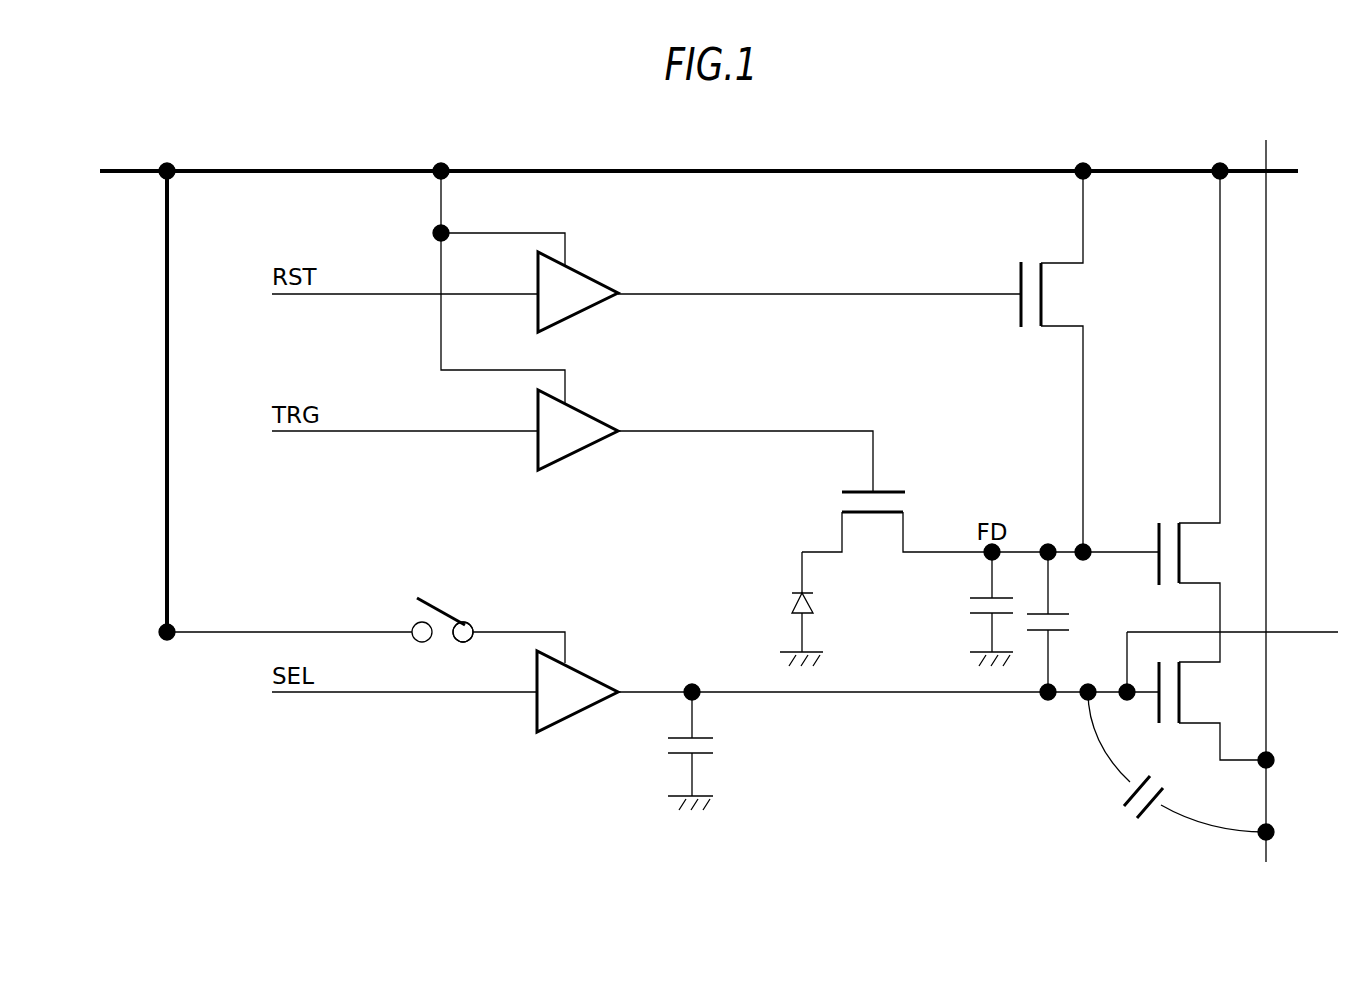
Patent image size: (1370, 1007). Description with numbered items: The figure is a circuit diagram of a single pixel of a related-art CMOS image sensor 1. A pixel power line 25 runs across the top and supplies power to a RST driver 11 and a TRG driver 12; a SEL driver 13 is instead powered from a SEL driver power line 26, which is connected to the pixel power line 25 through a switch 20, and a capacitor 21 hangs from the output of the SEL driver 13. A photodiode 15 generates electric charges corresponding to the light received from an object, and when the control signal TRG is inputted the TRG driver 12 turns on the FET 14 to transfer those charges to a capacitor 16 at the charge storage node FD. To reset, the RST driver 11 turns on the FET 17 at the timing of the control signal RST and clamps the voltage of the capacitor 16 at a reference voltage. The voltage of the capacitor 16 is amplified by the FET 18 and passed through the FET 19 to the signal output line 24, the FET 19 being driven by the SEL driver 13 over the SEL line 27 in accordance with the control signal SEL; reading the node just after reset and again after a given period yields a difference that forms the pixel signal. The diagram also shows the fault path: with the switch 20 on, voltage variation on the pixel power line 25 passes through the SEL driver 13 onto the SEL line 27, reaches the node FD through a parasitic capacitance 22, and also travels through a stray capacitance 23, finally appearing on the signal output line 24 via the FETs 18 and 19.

The CMOS image sensor 1 is at (902, 801).
The RST driver 11 is at (578, 283).
The TRG driver 12 is at (578, 422).
The SEL driver 13 is at (578, 680).
The FET 14 is at (873, 492).
The photodiode 15 is at (802, 592).
The capacitor 16 is at (985, 598).
The FET 17 is at (1021, 282).
The FET 18 is at (1157, 568).
The FET 19 is at (1157, 710).
The switch 20 is at (440, 643).
The capacitor 21 is at (712, 746).
The parasitic capacitance 22 is at (1042, 632).
The stray capacitance 23 is at (1128, 816).
The signal output line 24 is at (1263, 848).
The pixel power line 25 is at (775, 170).
The SEL driver power line 26 is at (383, 630).
The SEL line 27 is at (823, 695).